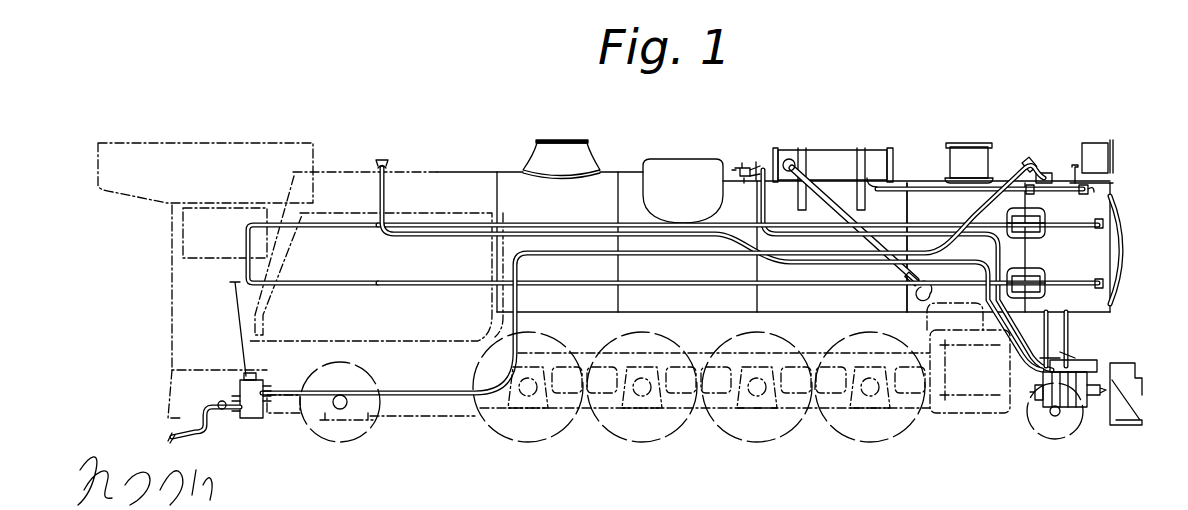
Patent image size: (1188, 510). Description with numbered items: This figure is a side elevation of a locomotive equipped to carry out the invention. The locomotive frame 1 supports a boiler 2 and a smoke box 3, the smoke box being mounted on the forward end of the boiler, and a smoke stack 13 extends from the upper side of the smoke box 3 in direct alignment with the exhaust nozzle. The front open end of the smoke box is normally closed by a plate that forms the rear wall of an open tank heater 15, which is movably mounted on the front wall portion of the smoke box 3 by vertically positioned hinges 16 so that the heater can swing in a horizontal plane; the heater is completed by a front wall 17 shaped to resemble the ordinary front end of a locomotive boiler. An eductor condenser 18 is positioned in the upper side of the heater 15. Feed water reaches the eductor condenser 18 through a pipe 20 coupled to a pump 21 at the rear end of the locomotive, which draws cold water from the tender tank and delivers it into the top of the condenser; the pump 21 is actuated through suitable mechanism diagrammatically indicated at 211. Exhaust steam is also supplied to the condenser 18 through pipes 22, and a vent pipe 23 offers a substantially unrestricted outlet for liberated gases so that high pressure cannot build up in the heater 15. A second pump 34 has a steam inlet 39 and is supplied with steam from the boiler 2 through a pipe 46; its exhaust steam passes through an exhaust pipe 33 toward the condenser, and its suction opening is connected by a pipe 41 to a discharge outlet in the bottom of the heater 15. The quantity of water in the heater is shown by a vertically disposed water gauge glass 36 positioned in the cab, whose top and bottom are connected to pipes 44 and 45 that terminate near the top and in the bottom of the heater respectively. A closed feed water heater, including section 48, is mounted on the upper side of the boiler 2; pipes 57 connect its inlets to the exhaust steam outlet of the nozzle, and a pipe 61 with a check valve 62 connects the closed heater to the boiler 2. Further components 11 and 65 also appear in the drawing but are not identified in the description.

The locomotive frame 1 is at (656, 358).
The boiler 2 is at (640, 182).
The smoke box 3 is at (921, 247).
The cylinder 11 is at (971, 410).
The smoke stack 13 is at (985, 155).
The open tank heater 15 is at (1100, 195).
The hinges 16 is at (1018, 234).
The front wall 17 is at (1129, 250).
The eductor condenser 18 is at (1046, 178).
The pipe 20 is at (606, 255).
The pump 21 is at (252, 420).
The pipes 22 is at (938, 173).
The vent pipe 23 is at (1091, 161).
The exhaust pipe 33 is at (1064, 352).
The pump 34 is at (1072, 420).
The water gauge glass 36 is at (248, 245).
The steam inlet 39 is at (1038, 400).
The pipe 41 is at (1076, 330).
The pipe 44 is at (526, 223).
The pipe 45 is at (430, 288).
The pipe 46 is at (470, 240).
The section of closed feed water heater 48 is at (833, 179).
The pipes 57 is at (836, 208).
The pipe 61 is at (756, 162).
The check valve 62 is at (745, 163).
The pipe 65 is at (837, 237).
The mechanism 211 is at (235, 330).